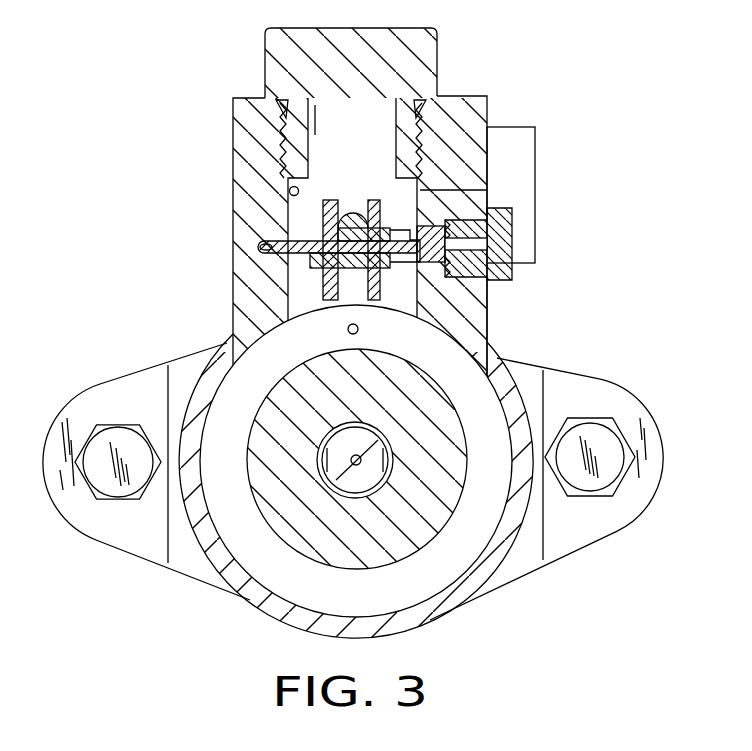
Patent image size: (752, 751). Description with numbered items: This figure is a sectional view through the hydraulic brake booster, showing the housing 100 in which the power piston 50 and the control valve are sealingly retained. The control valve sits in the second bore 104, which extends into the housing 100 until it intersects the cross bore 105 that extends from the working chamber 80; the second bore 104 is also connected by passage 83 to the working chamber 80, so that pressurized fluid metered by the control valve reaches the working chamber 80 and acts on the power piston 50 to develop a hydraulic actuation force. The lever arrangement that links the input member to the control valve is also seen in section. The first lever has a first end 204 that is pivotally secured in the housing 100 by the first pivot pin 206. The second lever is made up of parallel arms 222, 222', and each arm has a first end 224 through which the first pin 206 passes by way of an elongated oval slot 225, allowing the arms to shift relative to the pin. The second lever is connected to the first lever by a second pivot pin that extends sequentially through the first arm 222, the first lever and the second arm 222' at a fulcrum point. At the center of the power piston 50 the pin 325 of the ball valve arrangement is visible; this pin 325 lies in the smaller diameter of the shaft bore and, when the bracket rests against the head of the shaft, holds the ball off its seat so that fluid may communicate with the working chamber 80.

The housing 100 is at (472, 104).
The second bore 104 is at (349, 212).
The first end 204 is at (335, 203).
The cross bore 105 is at (285, 198).
The first pivot pin 206 is at (233, 262).
The elongated oval slot 225 is at (325, 284).
The second arm 222' is at (267, 265).
The passage 83 is at (347, 329).
The first arm 222 is at (489, 301).
The first end 224 is at (485, 192).
The power piston 50 is at (432, 398).
The working chamber 80 is at (445, 584).
The pin 325 is at (350, 463).